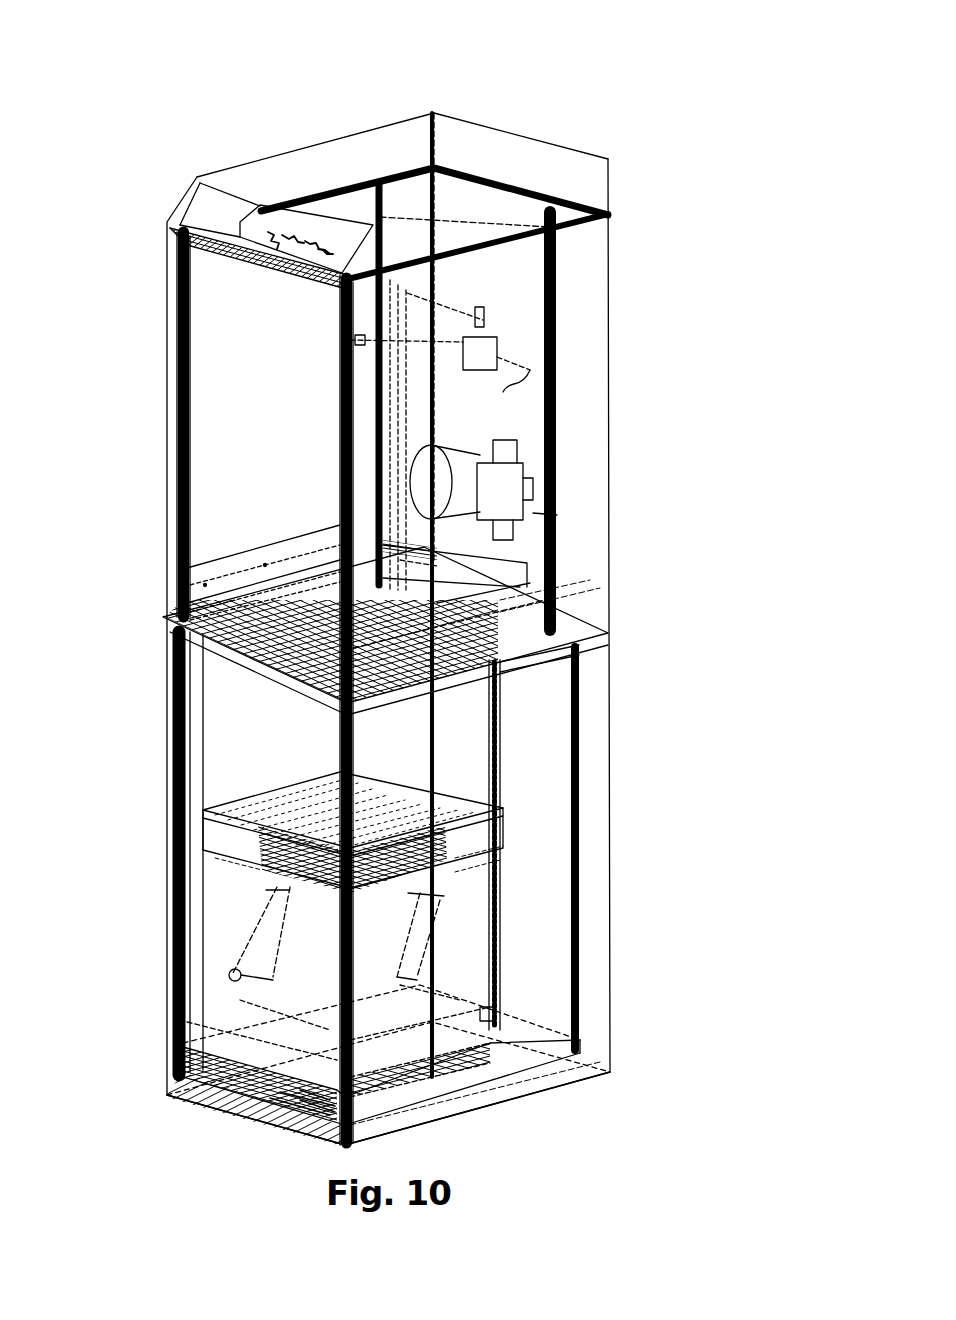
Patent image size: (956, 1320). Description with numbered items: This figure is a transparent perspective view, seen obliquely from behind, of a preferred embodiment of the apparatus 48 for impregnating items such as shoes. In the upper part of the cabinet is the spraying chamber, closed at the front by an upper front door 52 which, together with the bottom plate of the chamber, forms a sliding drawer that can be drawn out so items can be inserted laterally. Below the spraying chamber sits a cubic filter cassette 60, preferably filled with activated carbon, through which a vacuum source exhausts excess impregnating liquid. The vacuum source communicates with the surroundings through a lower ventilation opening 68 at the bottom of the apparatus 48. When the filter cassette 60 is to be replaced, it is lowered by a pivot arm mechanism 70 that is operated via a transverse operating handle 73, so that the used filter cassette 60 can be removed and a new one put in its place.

The apparatus 48 is at (520, 128).
The upper front door 52 is at (228, 407).
The pivot arm mechanism 70 is at (515, 403).
The filter cassette 60 is at (313, 757).
The transverse operating handle 73 is at (284, 988).
The lower ventilation opening 68 is at (320, 1113).